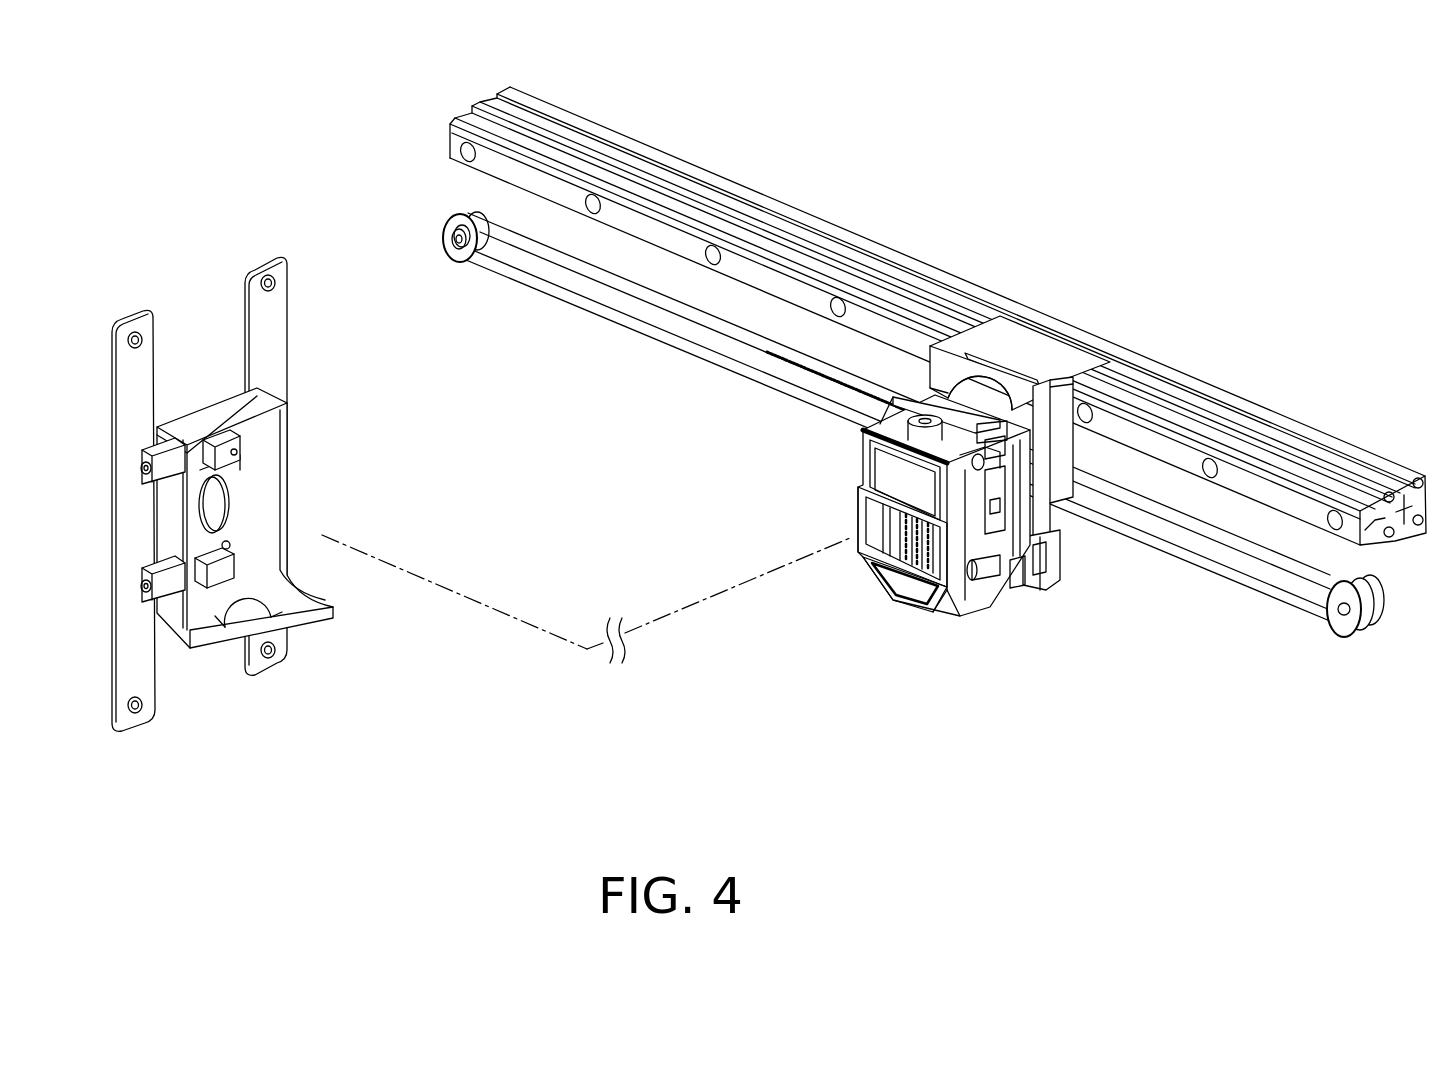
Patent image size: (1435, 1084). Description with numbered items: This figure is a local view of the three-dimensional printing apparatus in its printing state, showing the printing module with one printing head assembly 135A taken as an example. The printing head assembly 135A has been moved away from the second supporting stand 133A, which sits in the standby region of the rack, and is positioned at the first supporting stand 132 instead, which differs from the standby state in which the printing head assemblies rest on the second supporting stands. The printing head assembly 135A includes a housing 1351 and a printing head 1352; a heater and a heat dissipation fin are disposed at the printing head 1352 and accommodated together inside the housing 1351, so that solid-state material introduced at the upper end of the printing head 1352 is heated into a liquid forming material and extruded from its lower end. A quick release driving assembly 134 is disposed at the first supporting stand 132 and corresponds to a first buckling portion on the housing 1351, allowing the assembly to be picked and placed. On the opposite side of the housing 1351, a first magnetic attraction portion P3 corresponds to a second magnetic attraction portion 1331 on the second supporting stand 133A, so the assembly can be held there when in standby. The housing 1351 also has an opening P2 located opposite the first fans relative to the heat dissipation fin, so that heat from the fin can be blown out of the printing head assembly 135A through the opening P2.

The first supporting stand 132 is at (1010, 357).
The quick release driving assembly 134 is at (967, 378).
The printing head assembly 135A is at (891, 534).
The housing 1351 is at (1023, 577).
The printing head 1352 is at (907, 403).
The opening P2 is at (900, 572).
The first magnetic attraction portion P3 is at (867, 578).
The second supporting stand 133A is at (256, 494).
The second magnetic attraction portion 1331 is at (222, 572).